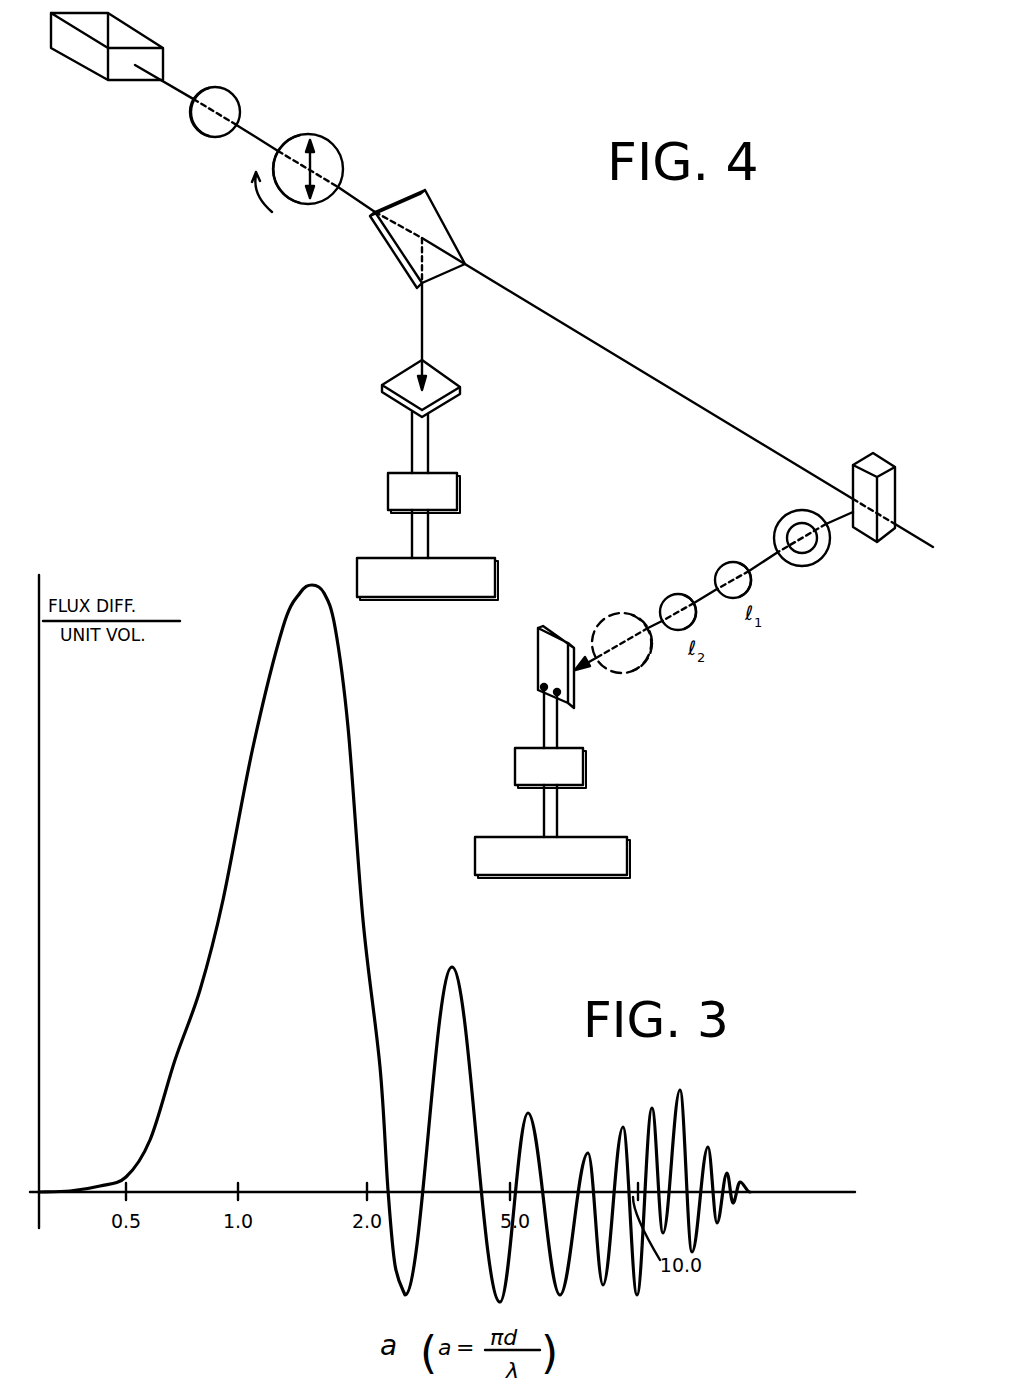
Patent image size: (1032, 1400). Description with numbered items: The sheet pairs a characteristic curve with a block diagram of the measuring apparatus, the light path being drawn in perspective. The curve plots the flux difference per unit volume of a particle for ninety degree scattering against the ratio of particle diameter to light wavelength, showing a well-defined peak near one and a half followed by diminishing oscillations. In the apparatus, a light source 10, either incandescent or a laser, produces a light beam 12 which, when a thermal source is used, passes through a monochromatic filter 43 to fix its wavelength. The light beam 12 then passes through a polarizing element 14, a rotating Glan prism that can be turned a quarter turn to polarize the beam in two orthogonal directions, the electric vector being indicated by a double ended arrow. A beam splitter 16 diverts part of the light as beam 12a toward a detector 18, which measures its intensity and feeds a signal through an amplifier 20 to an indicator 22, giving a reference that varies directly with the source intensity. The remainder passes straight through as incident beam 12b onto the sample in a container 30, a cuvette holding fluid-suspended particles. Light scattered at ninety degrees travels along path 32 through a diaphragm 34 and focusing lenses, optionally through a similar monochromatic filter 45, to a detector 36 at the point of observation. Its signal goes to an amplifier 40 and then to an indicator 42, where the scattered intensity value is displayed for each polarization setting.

The light source 10 is at (87, 69).
The light beam 12 is at (182, 91).
The monochromatic filter 43 is at (233, 85).
The polarizing element 14 is at (342, 150).
The beam splitter 16 is at (390, 250).
The diverted light beam 12a is at (422, 320).
The incident light beam 12b is at (583, 332).
The detector 18 is at (455, 380).
The amplifier 20 is at (388, 484).
The indicator 22 is at (420, 597).
The container 30 is at (863, 457).
The scattered light path 32 is at (833, 523).
The diaphragm 34 is at (815, 568).
The detector 36 is at (537, 663).
The monochromatic filter 45 is at (637, 672).
The amplifier 40 is at (585, 763).
The indicator 42 is at (628, 848).